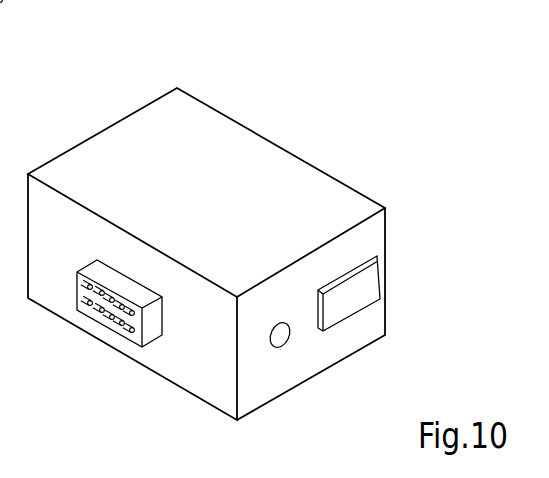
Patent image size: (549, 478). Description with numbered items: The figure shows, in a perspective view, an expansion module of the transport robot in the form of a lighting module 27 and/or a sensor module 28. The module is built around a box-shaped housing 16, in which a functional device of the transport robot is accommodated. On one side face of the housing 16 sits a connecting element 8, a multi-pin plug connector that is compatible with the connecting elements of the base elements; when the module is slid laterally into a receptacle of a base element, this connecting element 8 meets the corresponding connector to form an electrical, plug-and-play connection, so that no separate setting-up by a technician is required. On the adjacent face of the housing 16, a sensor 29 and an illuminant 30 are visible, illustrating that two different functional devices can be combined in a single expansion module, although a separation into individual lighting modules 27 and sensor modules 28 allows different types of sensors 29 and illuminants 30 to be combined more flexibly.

The lighting module 27 is at (199, 225).
The sensor module 28 is at (206, 249).
The housing 16 is at (253, 162).
The connecting element 8 is at (103, 332).
The sensor 29 is at (368, 283).
The illuminant 30 is at (285, 341).